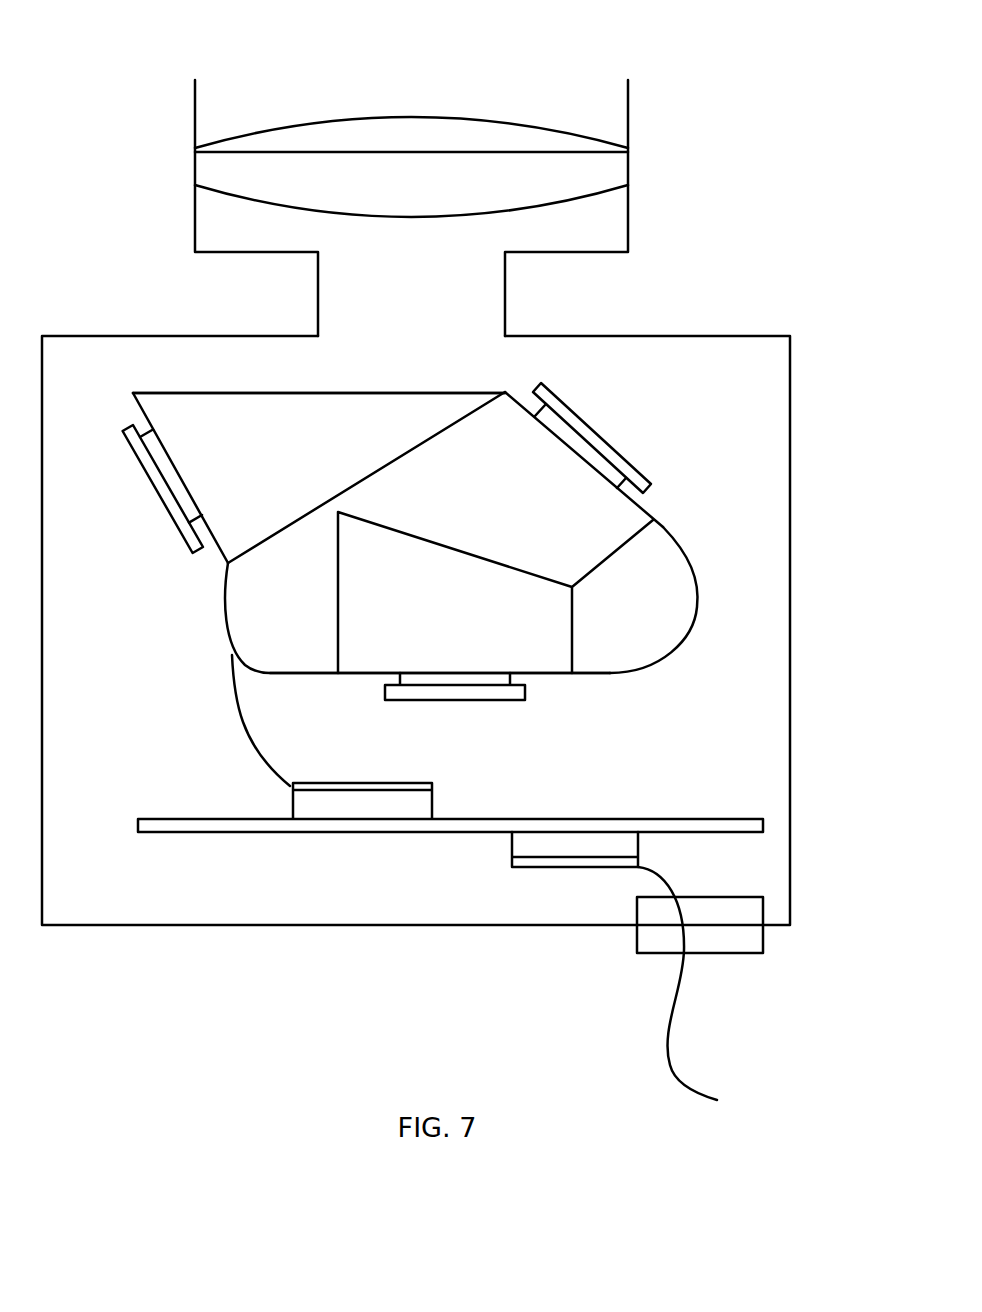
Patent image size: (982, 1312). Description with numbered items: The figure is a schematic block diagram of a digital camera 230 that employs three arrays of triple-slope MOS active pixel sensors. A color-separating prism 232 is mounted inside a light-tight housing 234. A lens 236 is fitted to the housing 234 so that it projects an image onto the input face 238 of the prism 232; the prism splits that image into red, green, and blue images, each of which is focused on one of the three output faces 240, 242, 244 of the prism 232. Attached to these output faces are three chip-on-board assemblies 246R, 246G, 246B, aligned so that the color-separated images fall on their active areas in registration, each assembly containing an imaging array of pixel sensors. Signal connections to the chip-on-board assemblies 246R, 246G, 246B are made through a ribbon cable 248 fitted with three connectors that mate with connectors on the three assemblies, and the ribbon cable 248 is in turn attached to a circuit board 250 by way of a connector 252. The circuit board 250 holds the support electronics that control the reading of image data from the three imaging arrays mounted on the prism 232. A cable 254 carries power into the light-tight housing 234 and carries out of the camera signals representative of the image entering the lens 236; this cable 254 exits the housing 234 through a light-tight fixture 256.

The digital camera 230 is at (446, 73).
The color-separating prism 232 is at (522, 510).
The light-tight housing 234 is at (790, 688).
The lens 236 is at (622, 165).
The input face 238 is at (324, 390).
The output face 240 is at (522, 388).
The output face 242 is at (140, 408).
The output face 244 is at (376, 674).
The chip-on-board assembly 246B is at (165, 488).
The chip-on-board assembly 246G is at (588, 428).
The chip-on-board assembly 246R is at (518, 693).
The ribbon cable 248 is at (668, 530).
The circuit board 250 is at (286, 833).
The connector 252 is at (337, 802).
The cable 254 is at (670, 1050).
The light-tight fixture 256 is at (737, 943).